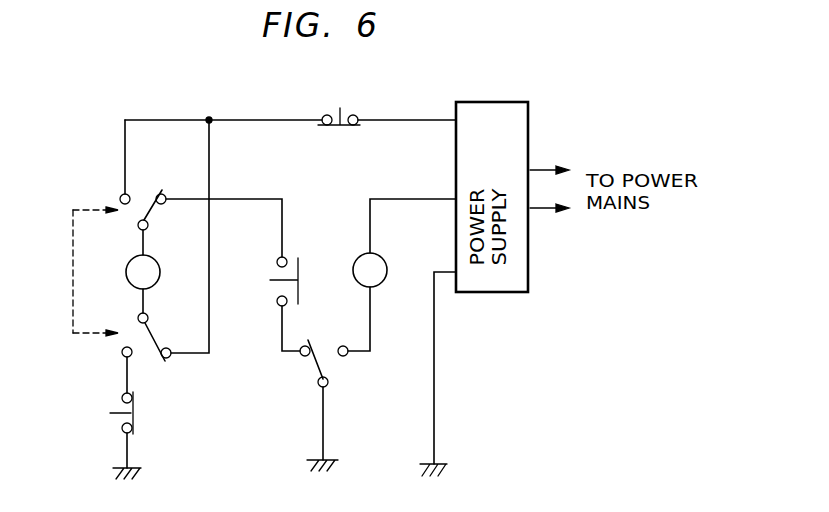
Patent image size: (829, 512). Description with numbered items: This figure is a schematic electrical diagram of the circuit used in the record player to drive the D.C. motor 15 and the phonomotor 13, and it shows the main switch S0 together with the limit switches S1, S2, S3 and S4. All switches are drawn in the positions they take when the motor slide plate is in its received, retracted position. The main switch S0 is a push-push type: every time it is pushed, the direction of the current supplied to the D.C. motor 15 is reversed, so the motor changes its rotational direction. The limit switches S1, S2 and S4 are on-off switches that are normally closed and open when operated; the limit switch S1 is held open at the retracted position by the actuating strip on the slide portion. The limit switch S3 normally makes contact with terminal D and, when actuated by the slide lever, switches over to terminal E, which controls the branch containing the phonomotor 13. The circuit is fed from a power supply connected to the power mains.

The phonomotor 13 is at (383, 283).
The D.C. motor 15 is at (127, 268).
The main switch S0 is at (106, 275).
The limit switch S1 is at (274, 281).
The limit switch S2 is at (108, 413).
The limit switch S3 is at (322, 380).
The limit switch S4 is at (339, 106).